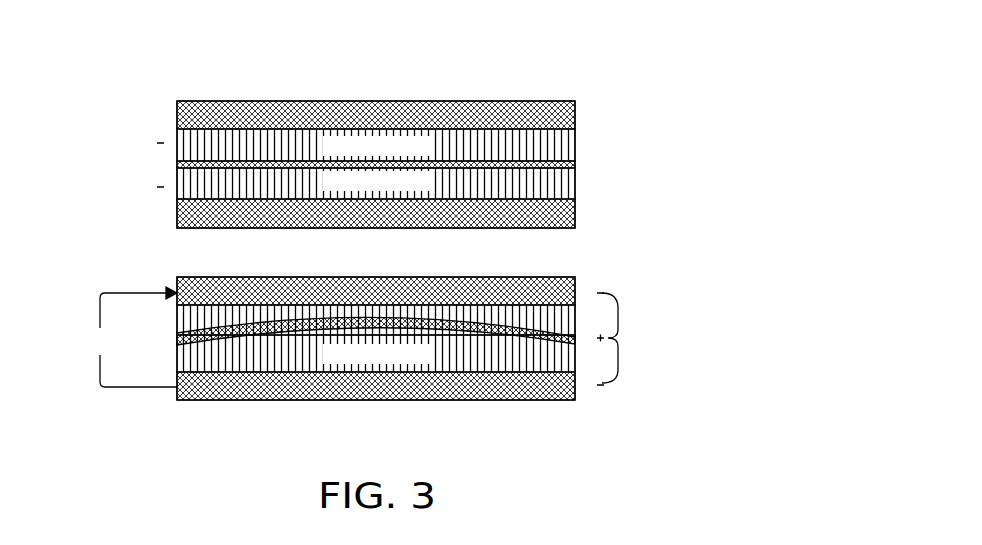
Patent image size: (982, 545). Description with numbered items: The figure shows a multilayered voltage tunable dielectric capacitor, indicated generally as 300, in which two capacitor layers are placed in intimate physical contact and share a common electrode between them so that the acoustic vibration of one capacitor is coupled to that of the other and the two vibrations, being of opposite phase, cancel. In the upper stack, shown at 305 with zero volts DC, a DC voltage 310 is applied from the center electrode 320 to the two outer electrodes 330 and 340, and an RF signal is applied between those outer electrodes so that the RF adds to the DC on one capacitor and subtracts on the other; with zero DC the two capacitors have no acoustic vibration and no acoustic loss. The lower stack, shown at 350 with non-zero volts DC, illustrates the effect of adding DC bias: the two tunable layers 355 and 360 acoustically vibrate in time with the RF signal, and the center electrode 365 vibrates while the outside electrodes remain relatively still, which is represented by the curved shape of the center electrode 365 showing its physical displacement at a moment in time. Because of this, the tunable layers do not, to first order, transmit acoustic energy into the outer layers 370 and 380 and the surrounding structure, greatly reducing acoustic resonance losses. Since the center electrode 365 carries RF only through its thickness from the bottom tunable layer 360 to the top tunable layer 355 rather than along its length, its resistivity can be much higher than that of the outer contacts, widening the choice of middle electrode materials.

The multilayered voltage tunable dielectric capacitor 300 is at (660, 47).
The zero DC bias state 305 is at (77, 100).
The DC voltage 310 is at (122, 152).
The center electrode 320 is at (575, 164).
The outer electrode 330 is at (575, 116).
The outer electrode 340 is at (575, 211).
The DC biased state 350 is at (77, 277).
The top tunable layer 355 is at (177, 317).
The bottom tunable layer 360 is at (177, 361).
The center electrode 365 is at (177, 339).
The outer layer 370 is at (575, 279).
The outer layer 380 is at (575, 400).